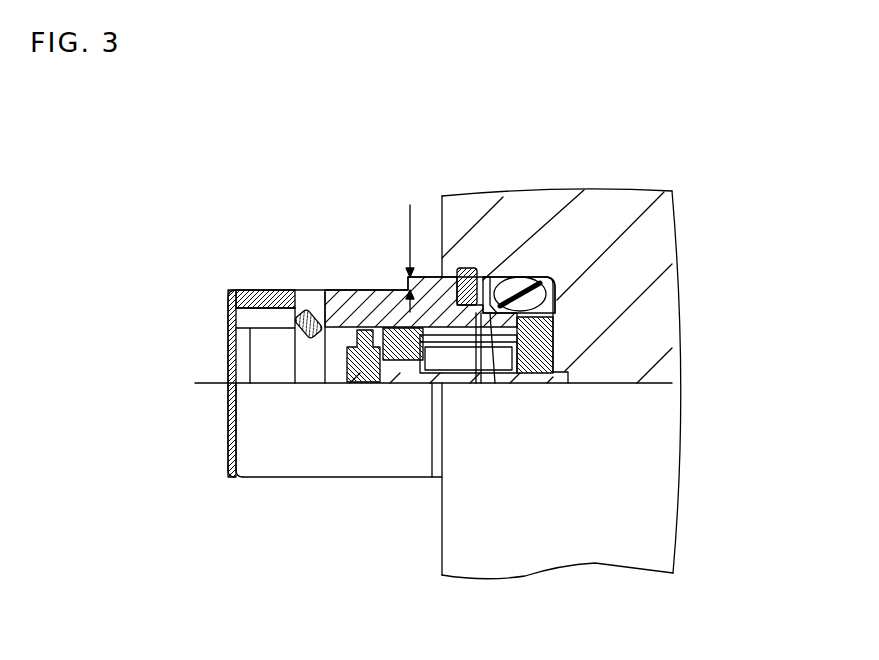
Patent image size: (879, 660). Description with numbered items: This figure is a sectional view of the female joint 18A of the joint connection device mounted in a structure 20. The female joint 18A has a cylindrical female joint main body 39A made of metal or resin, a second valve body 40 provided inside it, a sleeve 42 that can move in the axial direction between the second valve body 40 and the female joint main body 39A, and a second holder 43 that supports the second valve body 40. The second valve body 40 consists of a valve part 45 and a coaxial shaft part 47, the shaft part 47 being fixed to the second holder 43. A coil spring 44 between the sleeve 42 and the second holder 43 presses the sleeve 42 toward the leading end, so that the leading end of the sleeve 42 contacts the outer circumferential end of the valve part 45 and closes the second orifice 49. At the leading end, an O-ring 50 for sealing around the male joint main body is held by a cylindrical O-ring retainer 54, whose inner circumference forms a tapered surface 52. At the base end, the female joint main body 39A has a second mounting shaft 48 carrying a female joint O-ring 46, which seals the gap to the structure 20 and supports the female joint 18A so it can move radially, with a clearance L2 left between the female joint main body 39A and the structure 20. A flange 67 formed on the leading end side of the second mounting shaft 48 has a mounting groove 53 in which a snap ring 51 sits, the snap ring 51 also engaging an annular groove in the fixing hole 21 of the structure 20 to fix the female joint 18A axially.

The female joint 18A is at (248, 190).
The female joint main body 39A is at (334, 290).
The clearance L2 is at (398, 252).
The structure 20 is at (583, 548).
The fixing hole 21 is at (517, 278).
The sleeve 42 is at (374, 305).
The second holder 43 is at (557, 350).
The coil spring 44 is at (498, 400).
The valve part 45 is at (348, 378).
The female joint O-ring 46 is at (530, 290).
The shaft part 47 is at (433, 440).
The second mounting shaft 48 is at (491, 300).
The second orifice 49 is at (270, 353).
The O-ring 50 is at (302, 310).
The snap ring 51 is at (462, 268).
The tapered surface 52 is at (228, 326).
The mounting groove 53 is at (470, 395).
The O-ring retainer 54 is at (253, 300).
The flange 67 is at (476, 305).
The second valve body 40 is at (366, 385).